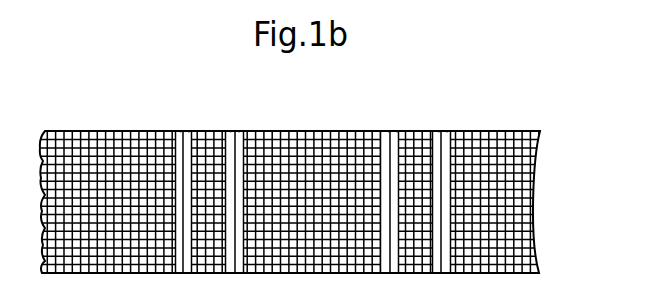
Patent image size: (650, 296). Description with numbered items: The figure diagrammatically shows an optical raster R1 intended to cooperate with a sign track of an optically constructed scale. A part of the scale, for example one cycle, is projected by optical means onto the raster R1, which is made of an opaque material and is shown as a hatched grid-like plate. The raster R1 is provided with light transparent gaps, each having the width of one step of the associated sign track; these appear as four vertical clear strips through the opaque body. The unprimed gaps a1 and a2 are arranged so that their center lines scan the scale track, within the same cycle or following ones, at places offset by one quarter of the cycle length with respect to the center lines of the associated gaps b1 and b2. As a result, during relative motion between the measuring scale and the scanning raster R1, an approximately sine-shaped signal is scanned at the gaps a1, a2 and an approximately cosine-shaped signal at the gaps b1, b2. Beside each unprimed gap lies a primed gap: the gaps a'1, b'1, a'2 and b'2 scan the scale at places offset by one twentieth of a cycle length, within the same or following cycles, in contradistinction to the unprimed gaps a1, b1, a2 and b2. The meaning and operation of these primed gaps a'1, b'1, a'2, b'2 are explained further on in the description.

The primed gap a'1 is at (166, 176).
The gap a1 is at (182, 123).
The primed gap b'1 is at (244, 176).
The gap b1 is at (233, 125).
The primed gap a'2 is at (370, 169).
The gap a2 is at (385, 130).
The primed gap b'2 is at (446, 170).
The gap b2 is at (439, 130).
The optical raster R1 is at (507, 209).